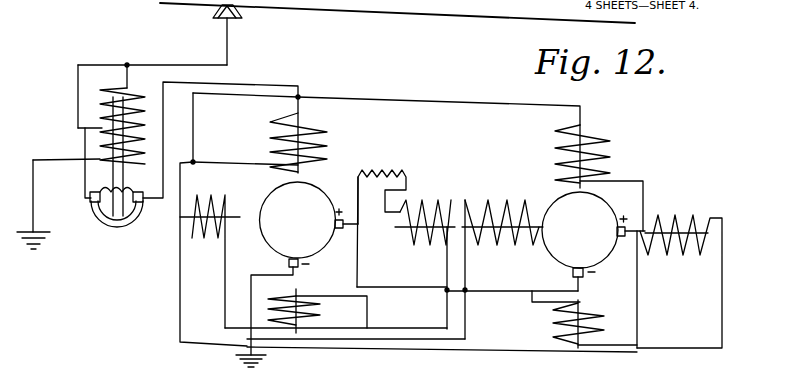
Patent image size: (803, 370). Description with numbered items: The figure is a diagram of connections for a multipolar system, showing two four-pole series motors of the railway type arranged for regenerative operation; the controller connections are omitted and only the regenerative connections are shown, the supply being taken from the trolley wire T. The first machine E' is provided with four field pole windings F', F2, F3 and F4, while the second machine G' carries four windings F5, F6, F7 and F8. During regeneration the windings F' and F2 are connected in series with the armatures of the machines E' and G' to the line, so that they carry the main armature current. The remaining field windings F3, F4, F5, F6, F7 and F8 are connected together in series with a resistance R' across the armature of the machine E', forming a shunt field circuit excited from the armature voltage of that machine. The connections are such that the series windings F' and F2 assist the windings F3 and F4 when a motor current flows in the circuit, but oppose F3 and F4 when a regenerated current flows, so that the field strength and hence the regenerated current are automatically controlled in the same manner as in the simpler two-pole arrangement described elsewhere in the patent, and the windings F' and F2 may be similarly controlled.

The trolley wire T is at (490, 20).
The field pole winding F' is at (310, 135).
The resistance R' is at (383, 182).
The machine E' is at (302, 224).
The machine G' is at (584, 234).
The field pole winding F2 is at (317, 311).
The field pole winding F3 is at (210, 261).
The field pole winding F4 is at (425, 237).
The field pole winding F5 is at (598, 156).
The field pole winding F6 is at (593, 324).
The field pole winding F7 is at (502, 237).
The field pole winding F8 is at (679, 281).